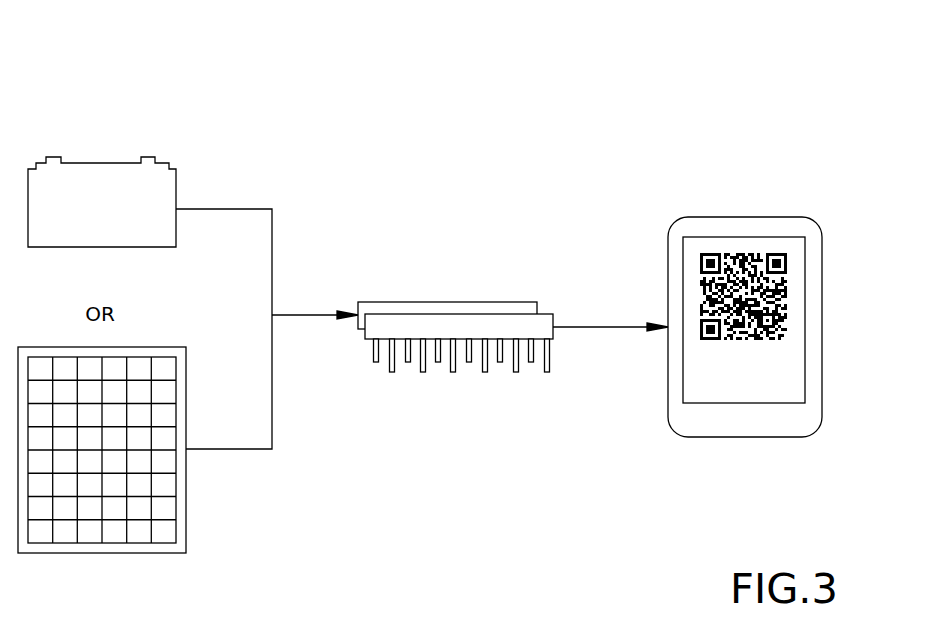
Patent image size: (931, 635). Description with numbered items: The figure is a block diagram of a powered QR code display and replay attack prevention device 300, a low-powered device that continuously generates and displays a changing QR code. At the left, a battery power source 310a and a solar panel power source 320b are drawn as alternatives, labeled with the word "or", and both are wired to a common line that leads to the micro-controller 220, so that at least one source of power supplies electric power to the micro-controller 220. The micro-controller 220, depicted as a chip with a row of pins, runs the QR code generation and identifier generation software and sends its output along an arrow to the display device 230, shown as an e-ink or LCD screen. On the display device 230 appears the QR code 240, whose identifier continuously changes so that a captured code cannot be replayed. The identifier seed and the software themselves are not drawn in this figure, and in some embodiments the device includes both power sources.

The powered QR code display and replay attack prevention device 300 is at (286, 78).
The battery power source 310a is at (220, 163).
The solar panel power source 320b is at (232, 497).
The micro-controller 220 is at (433, 302).
The display device 230 is at (668, 262).
The QR code 240 is at (712, 340).